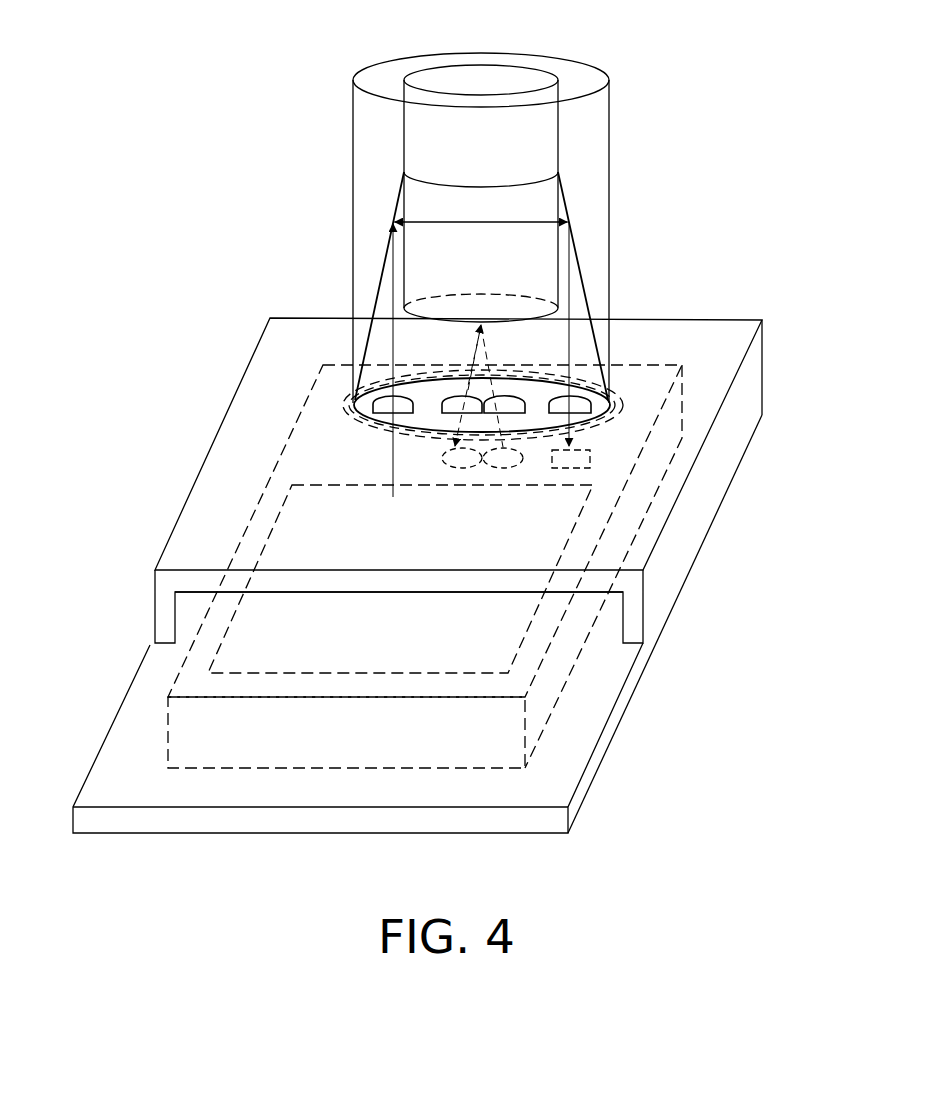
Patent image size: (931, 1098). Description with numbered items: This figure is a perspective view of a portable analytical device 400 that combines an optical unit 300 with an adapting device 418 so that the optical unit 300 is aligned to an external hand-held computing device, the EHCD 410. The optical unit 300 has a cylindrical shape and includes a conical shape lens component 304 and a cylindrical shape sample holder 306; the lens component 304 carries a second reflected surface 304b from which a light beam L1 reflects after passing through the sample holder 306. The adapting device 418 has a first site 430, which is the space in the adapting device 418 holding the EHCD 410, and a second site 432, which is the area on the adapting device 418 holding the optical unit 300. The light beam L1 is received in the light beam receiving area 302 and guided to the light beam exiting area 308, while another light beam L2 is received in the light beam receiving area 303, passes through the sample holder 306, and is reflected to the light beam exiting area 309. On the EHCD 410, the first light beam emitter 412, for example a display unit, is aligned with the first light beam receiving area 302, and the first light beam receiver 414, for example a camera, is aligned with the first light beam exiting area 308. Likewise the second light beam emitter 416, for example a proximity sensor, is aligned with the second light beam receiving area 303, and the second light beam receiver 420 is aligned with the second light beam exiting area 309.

The portable analytical device 400 is at (830, 58).
The optical unit 300 is at (375, 75).
The sample holder 306 is at (404, 135).
The second reflected surface 304b is at (567, 202).
The lens component 304 is at (404, 268).
The light beam L1 is at (393, 335).
The light beam L2 is at (487, 356).
The light beam receiving area 302 is at (353, 402).
The light beam exiting area 309 is at (450, 400).
The light beam receiving area 303 is at (580, 405).
The second site 432 is at (362, 422).
The light beam exiting area 308 is at (622, 402).
The first light beam receiver 414 is at (590, 457).
The second light beam receiver 420 is at (457, 468).
The second light beam emitter 416 is at (493, 468).
The adapting device 418 is at (195, 487).
The first light beam emitter 412 is at (325, 540).
The first site 430 is at (191, 622).
The EHCD 410 is at (527, 730).